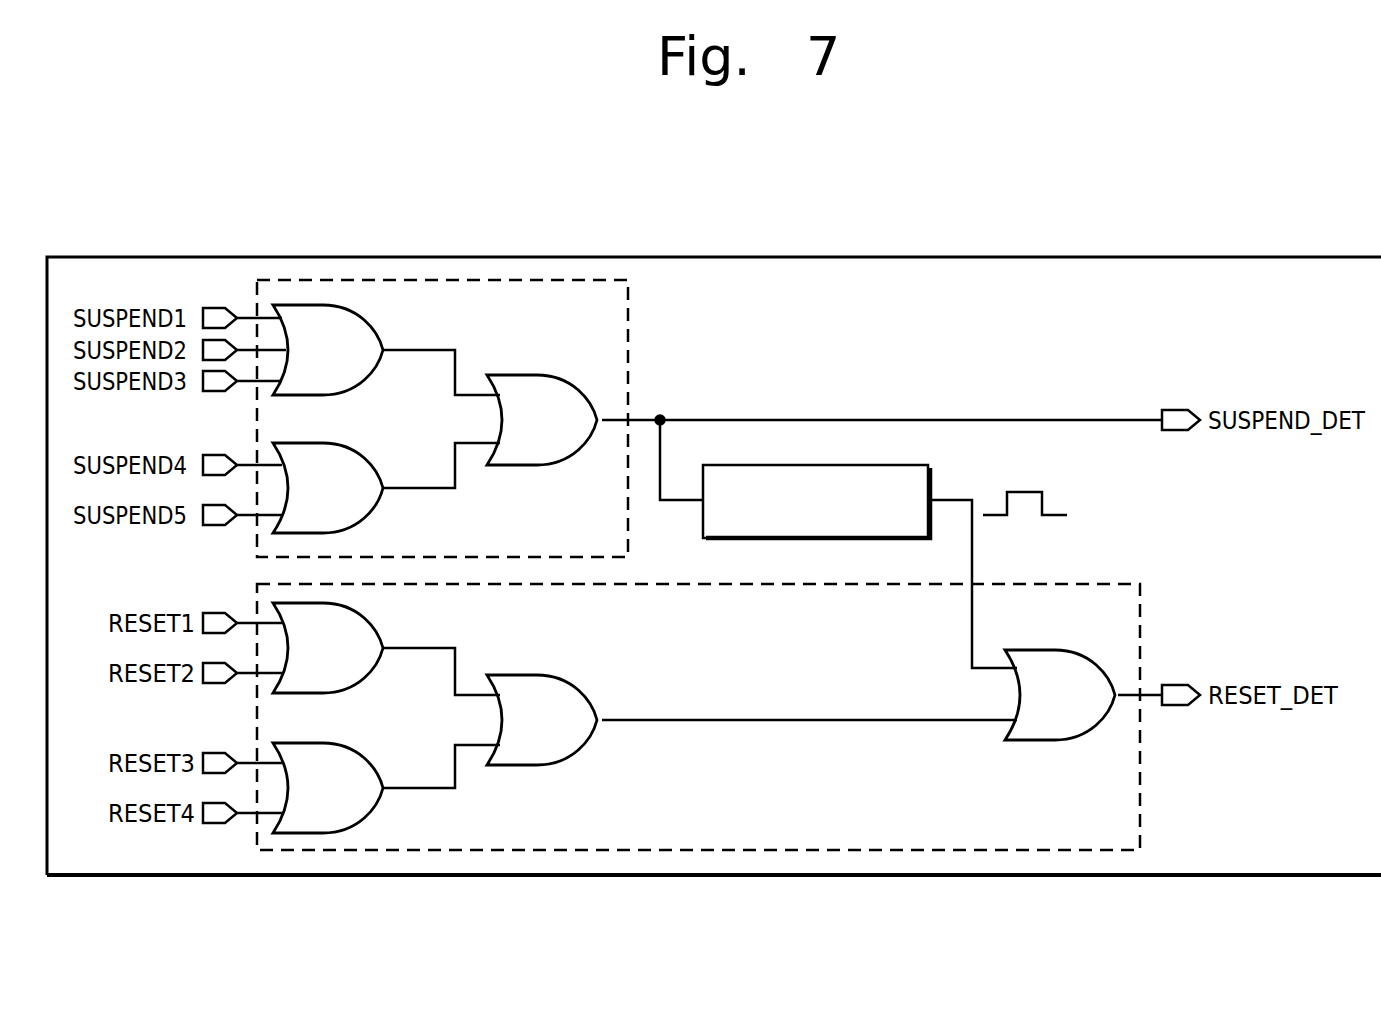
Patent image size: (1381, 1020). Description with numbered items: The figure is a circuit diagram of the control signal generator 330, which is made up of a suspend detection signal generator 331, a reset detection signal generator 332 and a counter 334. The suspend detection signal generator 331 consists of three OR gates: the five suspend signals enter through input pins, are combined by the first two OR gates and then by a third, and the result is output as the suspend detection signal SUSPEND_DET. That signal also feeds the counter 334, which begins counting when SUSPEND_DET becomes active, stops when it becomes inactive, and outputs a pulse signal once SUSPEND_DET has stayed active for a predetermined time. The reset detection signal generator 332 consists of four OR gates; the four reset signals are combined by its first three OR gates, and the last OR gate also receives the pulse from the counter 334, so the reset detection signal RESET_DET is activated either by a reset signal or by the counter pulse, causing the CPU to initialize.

The control signal generator 330 is at (990, 257).
The suspend detection signal generator 331 is at (628, 337).
The reset detection signal generator 332 is at (1140, 612).
The counter 334 is at (928, 480).